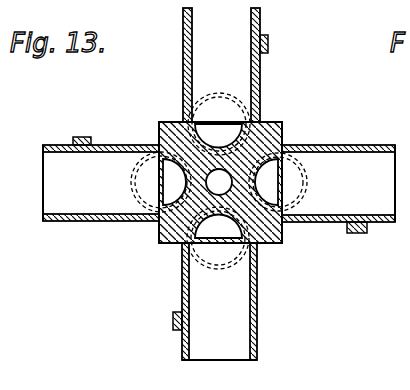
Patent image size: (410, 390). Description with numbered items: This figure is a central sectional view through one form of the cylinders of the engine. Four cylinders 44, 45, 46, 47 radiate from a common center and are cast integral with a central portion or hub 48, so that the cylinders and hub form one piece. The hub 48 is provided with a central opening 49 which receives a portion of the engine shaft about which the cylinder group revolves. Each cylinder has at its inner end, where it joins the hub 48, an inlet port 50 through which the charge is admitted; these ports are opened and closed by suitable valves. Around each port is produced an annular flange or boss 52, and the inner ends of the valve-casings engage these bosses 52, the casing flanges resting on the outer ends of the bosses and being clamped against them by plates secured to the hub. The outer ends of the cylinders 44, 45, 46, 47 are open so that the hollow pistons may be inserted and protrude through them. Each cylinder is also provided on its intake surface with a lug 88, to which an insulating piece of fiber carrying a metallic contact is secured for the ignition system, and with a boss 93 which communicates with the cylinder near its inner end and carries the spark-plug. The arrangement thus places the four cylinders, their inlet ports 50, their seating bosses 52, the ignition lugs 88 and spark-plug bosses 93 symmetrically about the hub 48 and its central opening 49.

The cylinder 44 is at (221, 65).
The cylinder 45 is at (101, 183).
The cylinder 46 is at (219, 301).
The cylinder 47 is at (338, 183).
The central portion or hub 48 is at (262, 121).
The central opening 49 is at (219, 182).
The inlet port 50 is at (220, 181).
The annular flange or boss 52 is at (226, 97).
The lug 88 is at (86, 136).
The boss 93 is at (159, 127).